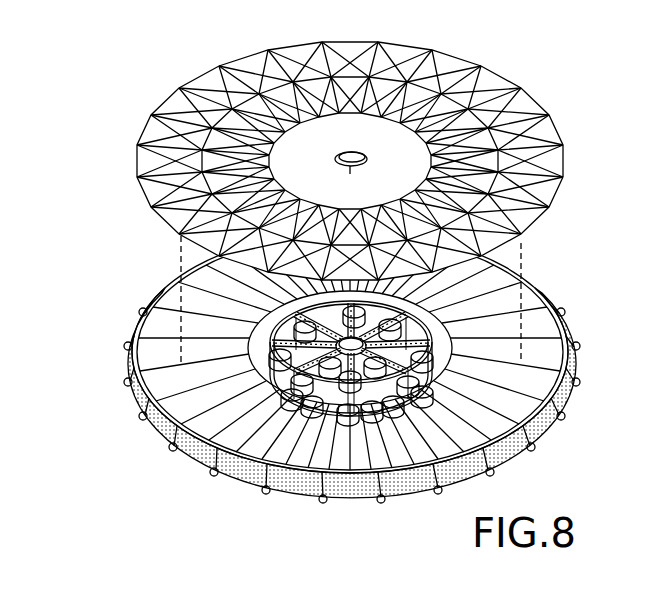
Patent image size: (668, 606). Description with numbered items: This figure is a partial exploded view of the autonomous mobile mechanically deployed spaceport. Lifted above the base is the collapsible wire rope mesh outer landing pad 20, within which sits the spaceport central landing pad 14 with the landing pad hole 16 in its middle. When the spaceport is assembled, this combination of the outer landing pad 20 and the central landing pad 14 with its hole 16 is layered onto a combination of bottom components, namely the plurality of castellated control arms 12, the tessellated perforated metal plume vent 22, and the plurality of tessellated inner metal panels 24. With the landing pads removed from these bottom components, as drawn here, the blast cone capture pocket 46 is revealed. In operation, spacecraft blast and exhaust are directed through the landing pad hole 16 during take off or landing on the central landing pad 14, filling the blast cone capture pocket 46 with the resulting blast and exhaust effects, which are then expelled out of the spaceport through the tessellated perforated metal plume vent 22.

The castellated control arms 12 is at (359, 378).
The spaceport central landing pad 14 is at (359, 154).
The landing pad hole 16 is at (350, 174).
The collapsible wire rope mesh outer landing pad 20 is at (526, 102).
The tessellated perforated metal plume vent 22 is at (243, 483).
The tessellated inner metal panels 24 is at (153, 340).
The blast cone capture pocket 46 is at (543, 346).